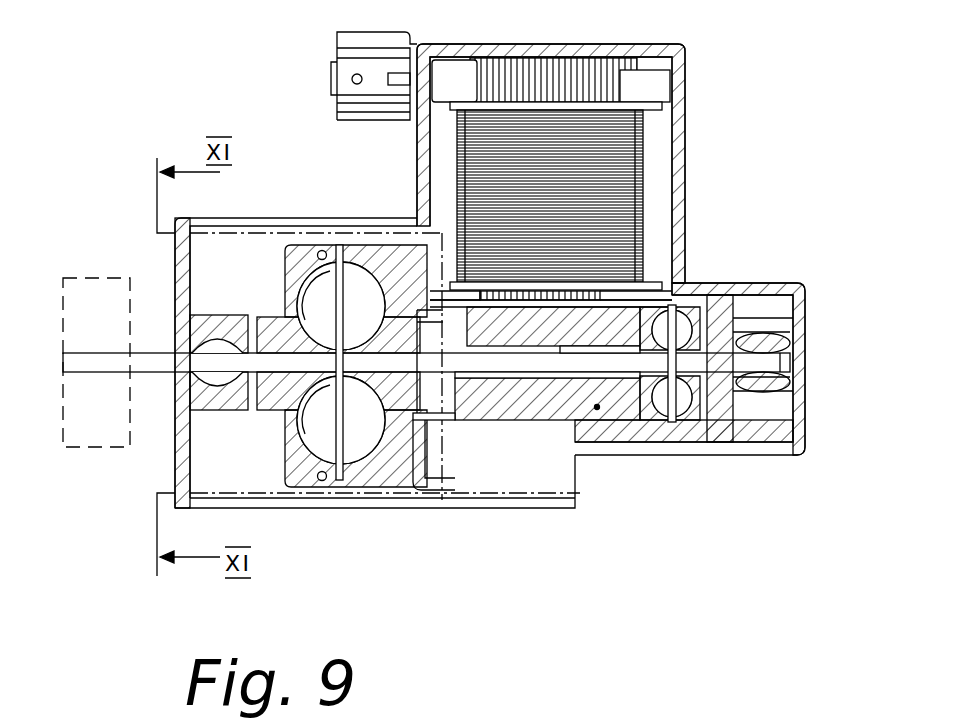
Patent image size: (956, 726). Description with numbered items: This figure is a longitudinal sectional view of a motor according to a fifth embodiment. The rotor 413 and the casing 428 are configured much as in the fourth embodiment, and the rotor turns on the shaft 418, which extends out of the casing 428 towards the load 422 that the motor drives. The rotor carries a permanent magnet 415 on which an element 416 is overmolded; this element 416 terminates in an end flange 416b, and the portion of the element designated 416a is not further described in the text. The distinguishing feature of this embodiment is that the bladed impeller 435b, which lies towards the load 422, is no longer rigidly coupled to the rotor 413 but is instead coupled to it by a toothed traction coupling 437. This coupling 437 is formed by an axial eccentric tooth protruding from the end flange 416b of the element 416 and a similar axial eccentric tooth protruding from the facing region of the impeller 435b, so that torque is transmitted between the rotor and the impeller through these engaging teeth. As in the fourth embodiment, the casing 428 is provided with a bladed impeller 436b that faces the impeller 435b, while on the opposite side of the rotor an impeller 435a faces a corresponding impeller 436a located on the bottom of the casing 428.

The rotor 413 is at (625, 284).
The permanent magnet 415 is at (680, 456).
The element overmolded on the permanent magnet 416 is at (525, 393).
The rotor hub upper portion 416a is at (563, 382).
The end flange 416b is at (597, 407).
The shaft 418 is at (213, 338).
The load 422 is at (82, 440).
The casing 428 is at (333, 212).
The impeller 435a is at (662, 399).
The bladed impeller 435b is at (357, 432).
The impeller 436a is at (683, 323).
The bladed impeller 436b is at (318, 432).
The toothed traction coupling 437 is at (422, 428).